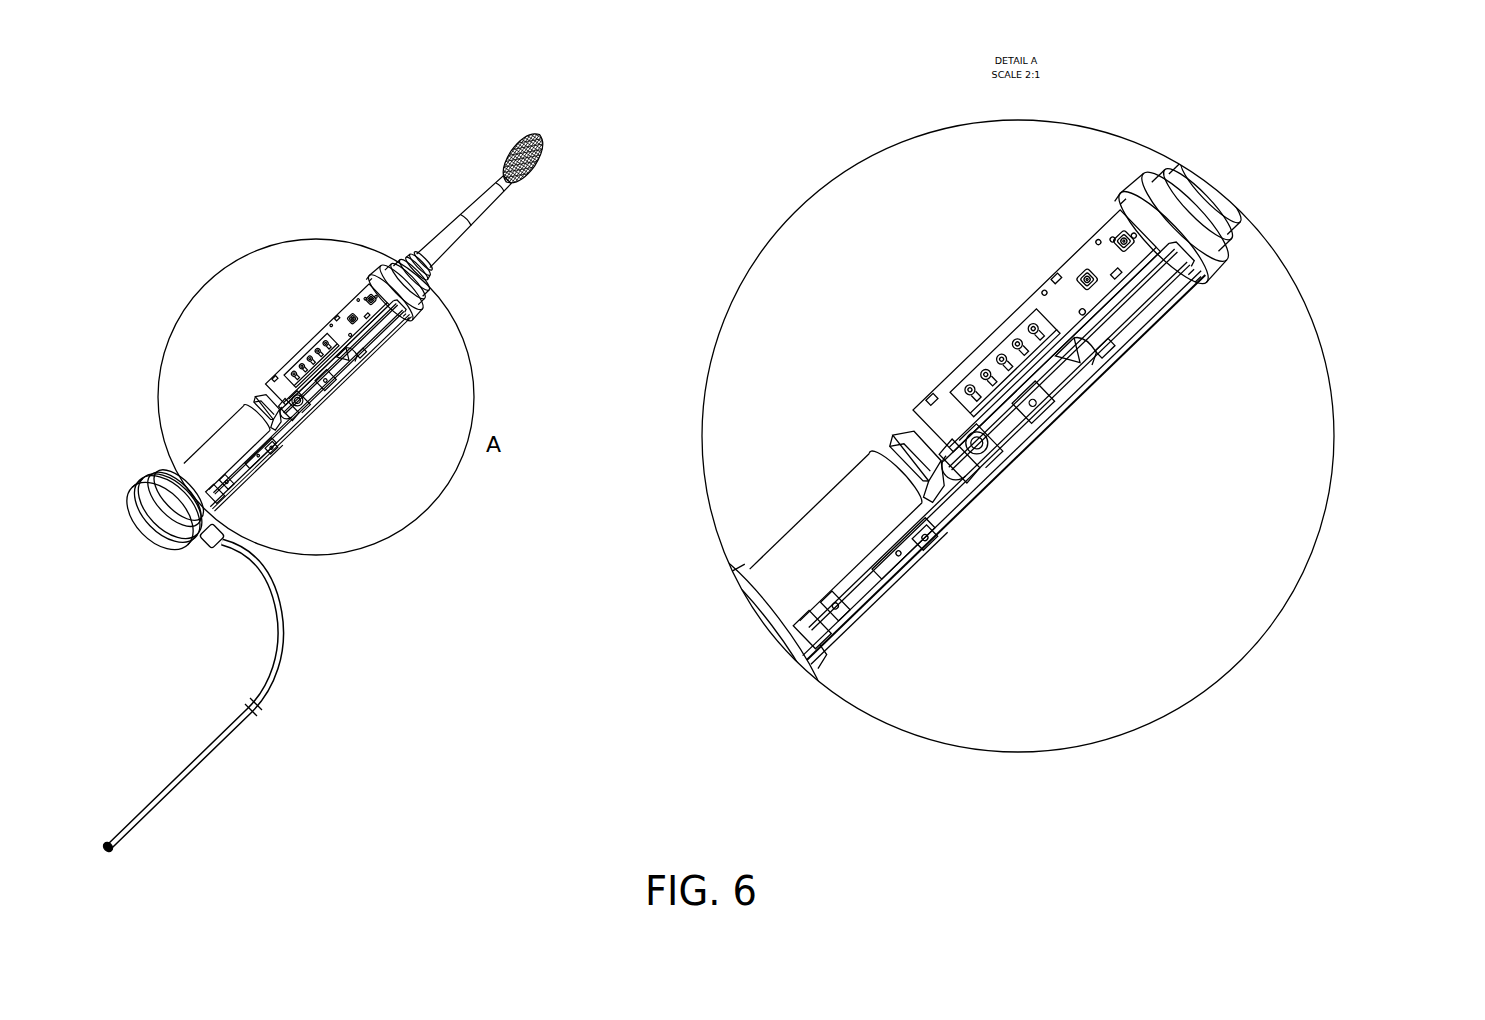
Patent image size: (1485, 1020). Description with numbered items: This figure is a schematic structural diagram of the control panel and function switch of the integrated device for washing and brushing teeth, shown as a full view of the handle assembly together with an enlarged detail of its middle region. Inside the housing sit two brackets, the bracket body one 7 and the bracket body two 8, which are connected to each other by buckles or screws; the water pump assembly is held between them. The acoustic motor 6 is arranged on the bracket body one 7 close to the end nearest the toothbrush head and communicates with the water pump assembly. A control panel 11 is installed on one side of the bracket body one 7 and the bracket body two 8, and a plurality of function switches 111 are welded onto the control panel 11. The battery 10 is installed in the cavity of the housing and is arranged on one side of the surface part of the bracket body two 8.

The acoustic motor 6 is at (993, 435).
The bracket body one 7 is at (1006, 467).
The bracket body two 8 is at (918, 464).
The battery 10 is at (838, 533).
The control panel 11 is at (1036, 331).
The function switch 111 is at (1124, 241).